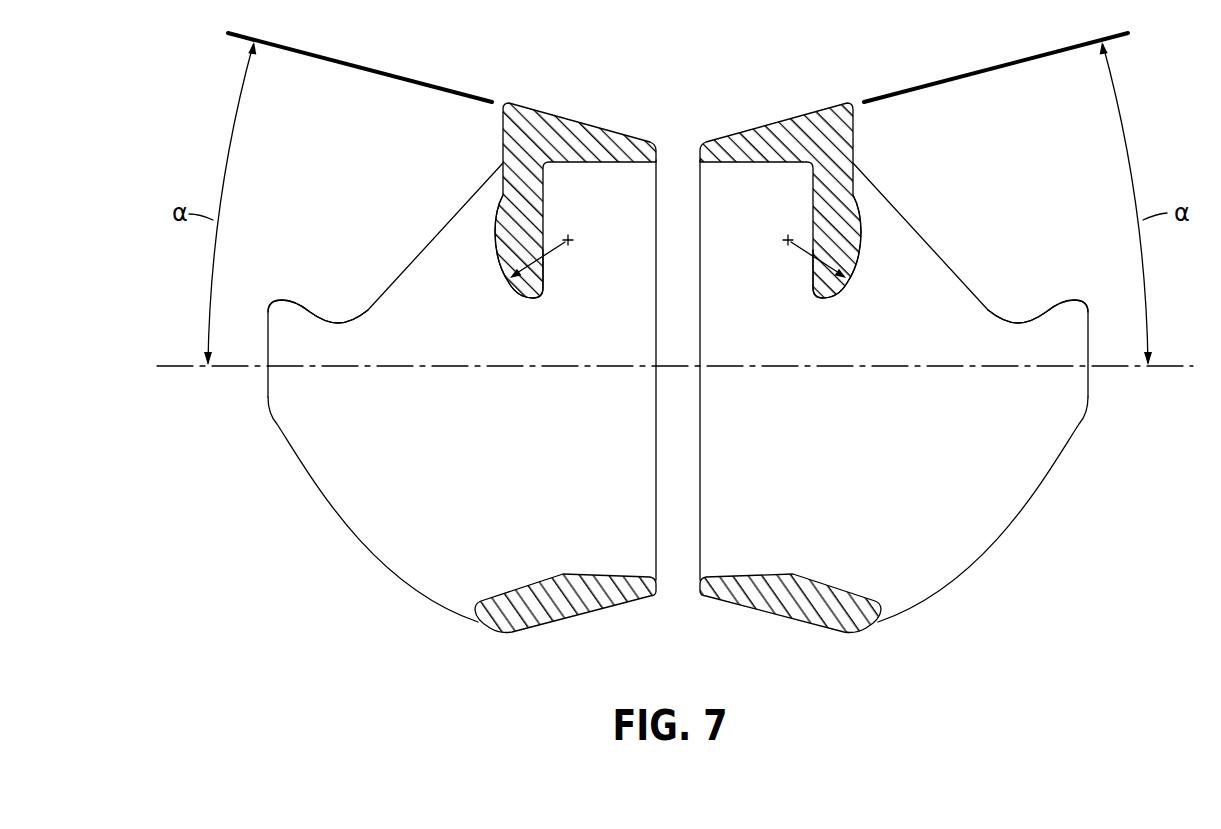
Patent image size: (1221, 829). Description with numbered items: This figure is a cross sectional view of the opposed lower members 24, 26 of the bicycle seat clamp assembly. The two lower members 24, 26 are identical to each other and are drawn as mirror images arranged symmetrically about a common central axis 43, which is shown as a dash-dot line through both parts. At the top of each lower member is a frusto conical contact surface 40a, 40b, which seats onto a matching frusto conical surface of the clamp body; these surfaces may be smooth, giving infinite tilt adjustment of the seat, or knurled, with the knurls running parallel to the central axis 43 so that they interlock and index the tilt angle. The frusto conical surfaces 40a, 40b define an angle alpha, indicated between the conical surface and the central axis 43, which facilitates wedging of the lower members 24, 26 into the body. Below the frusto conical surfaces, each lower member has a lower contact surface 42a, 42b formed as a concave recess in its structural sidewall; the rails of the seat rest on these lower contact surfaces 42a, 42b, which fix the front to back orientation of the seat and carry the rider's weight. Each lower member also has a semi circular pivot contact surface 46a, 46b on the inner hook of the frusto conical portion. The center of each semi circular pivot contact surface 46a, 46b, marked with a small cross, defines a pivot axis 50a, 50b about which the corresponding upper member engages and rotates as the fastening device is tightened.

The lower member 24 is at (894, 452).
The lower member 26 is at (500, 668).
The frusto conical contact surface 40a is at (782, 118).
The frusto conical contact surface 40b is at (575, 118).
The lower contact surface 42a is at (1033, 317).
The lower contact surface 42b is at (322, 317).
The central axis 43 is at (1157, 368).
The pivot contact surface 46a is at (846, 288).
The pivot contact surface 46b is at (510, 288).
The pivot axis 50a is at (785, 238).
The pivot axis 50b is at (570, 238).